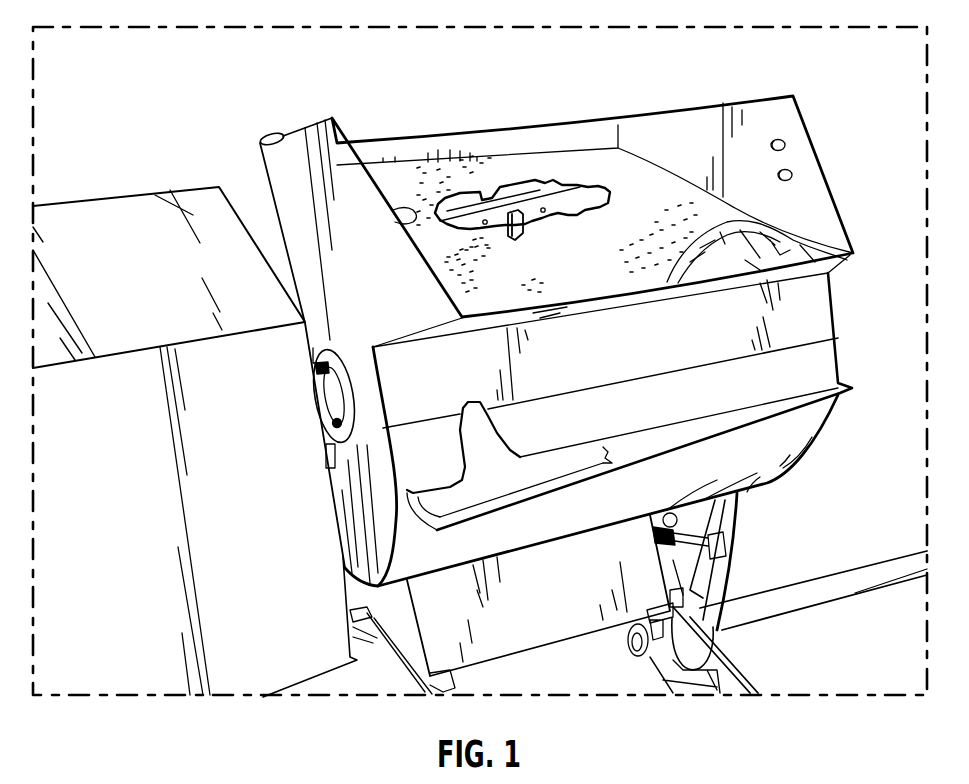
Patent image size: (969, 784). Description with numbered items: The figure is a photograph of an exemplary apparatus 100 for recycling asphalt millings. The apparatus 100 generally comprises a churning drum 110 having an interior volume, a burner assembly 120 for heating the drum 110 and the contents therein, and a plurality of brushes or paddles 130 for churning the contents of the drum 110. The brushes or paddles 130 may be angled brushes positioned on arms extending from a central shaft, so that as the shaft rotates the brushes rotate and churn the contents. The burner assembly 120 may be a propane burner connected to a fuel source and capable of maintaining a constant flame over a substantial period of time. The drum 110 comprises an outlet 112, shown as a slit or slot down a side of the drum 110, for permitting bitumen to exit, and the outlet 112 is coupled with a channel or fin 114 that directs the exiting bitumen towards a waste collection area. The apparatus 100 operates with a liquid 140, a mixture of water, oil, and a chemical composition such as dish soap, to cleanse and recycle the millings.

The apparatus 100 is at (172, 157).
The churning drum 110 is at (398, 306).
The outlet 112 is at (505, 406).
The channel or fin 114 is at (408, 468).
The burner assembly 120 is at (528, 602).
The brushes or paddles 130 is at (574, 206).
The liquid 140 is at (580, 273).